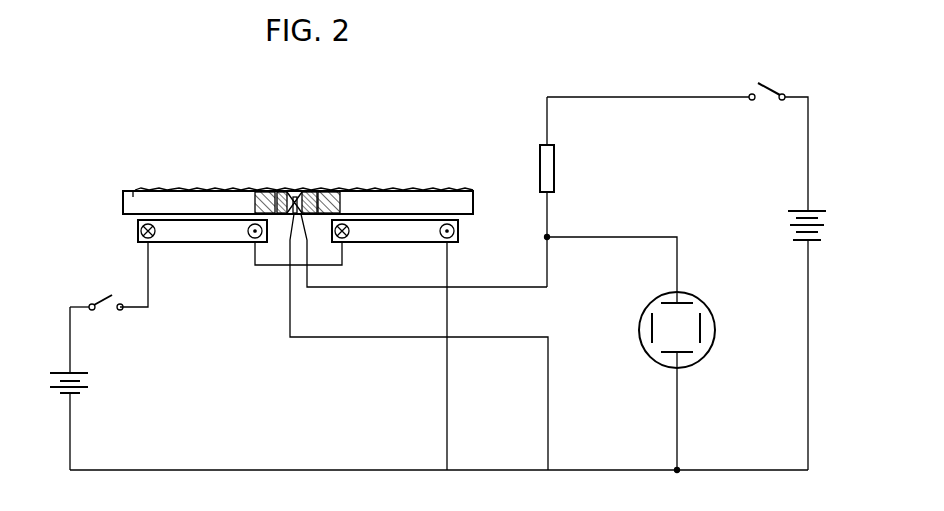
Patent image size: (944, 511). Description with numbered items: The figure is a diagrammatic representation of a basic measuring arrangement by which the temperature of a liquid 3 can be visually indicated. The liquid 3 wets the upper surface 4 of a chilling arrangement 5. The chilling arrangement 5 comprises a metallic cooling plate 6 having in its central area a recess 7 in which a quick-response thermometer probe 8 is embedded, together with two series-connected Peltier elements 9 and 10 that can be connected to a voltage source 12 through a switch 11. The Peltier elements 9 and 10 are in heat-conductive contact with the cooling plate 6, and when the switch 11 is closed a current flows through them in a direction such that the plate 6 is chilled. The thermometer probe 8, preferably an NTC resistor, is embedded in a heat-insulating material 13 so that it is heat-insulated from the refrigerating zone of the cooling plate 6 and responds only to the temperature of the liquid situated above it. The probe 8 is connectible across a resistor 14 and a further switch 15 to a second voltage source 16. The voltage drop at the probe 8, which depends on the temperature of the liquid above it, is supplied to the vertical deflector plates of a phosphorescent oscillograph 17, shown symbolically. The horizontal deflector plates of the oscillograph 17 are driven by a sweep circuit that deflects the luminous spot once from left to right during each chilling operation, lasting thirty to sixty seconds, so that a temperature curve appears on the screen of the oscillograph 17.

The liquid 3 is at (363, 188).
The upper surface 4 is at (131, 189).
The chilling arrangement 5 is at (133, 203).
The metallic cooling plate 6 is at (410, 202).
The recess 7 is at (285, 191).
The quick-response thermometer probe 8 is at (300, 191).
The Peltier element 9 is at (203, 233).
The Peltier element 10 is at (392, 233).
The switch 11 is at (104, 296).
The voltage source 12 is at (86, 382).
The heat-insulating material 13 is at (309, 191).
The resistor 14 is at (553, 173).
The further switch 15 is at (760, 82).
The second voltage source 16 is at (790, 225).
The phosphorescent oscillograph 17 is at (680, 330).